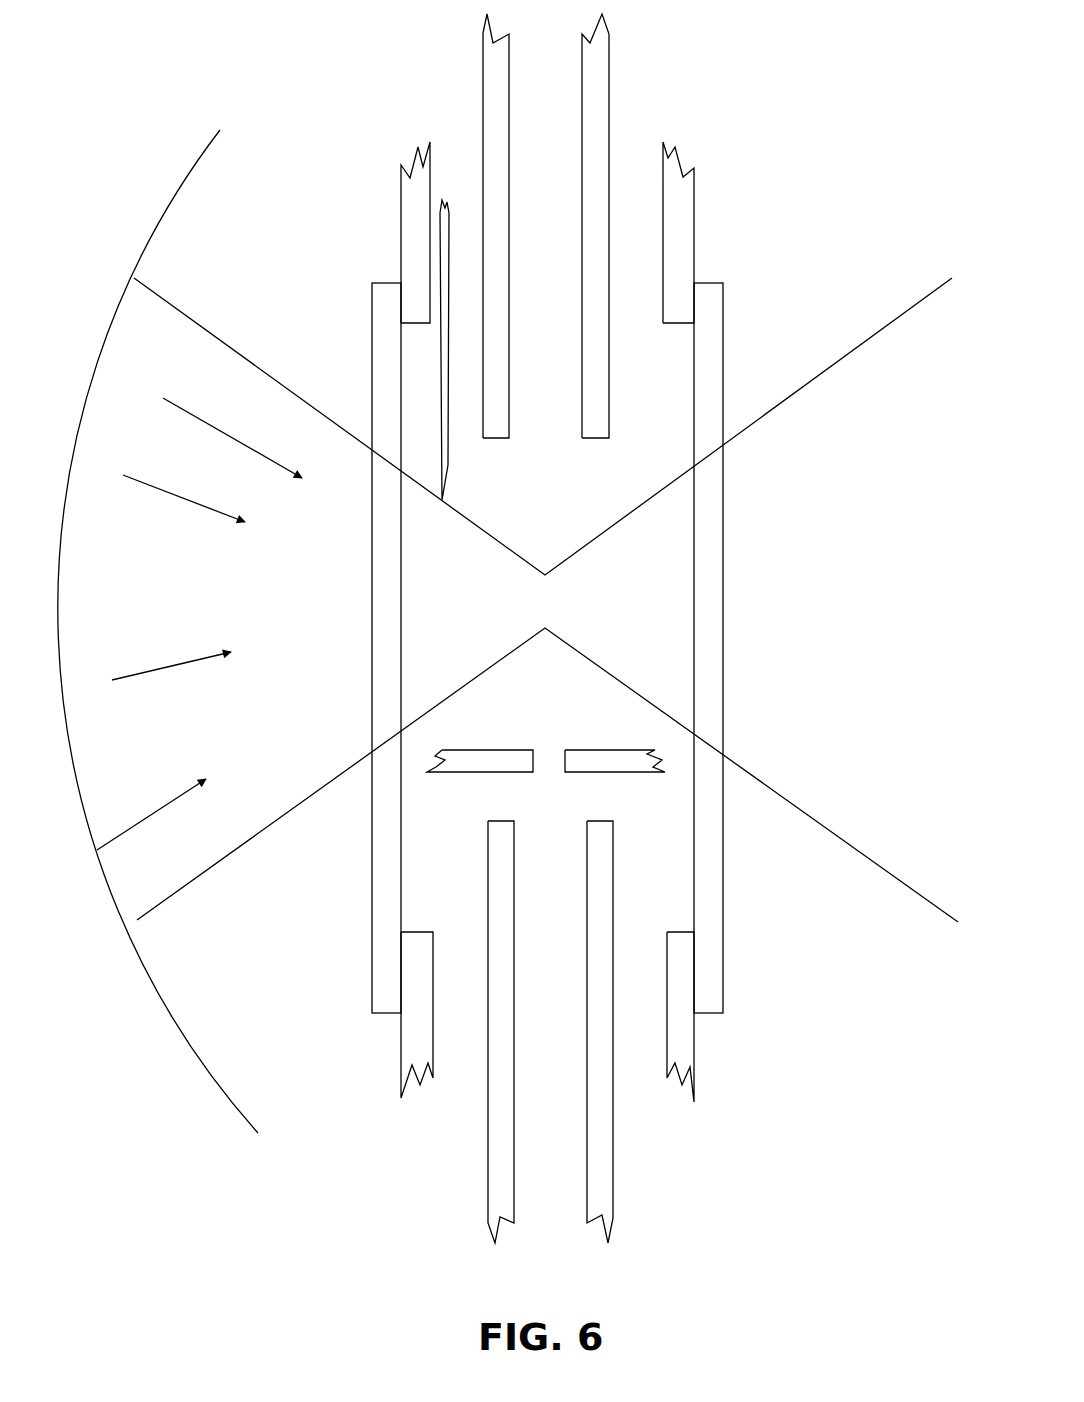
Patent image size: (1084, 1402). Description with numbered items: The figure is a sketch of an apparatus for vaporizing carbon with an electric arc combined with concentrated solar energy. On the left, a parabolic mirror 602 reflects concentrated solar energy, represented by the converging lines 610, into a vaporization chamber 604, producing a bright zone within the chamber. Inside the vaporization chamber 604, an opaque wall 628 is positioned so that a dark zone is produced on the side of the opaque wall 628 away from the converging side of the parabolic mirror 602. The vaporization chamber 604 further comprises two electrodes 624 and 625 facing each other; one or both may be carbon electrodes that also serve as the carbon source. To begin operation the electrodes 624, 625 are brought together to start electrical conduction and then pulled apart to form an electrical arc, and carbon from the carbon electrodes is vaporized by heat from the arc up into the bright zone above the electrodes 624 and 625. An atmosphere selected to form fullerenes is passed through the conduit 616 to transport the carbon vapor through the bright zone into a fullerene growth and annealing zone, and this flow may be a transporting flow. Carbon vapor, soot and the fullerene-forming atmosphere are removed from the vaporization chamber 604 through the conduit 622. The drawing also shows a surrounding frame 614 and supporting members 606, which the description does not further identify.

The parabolic mirror 602 is at (157, 227).
The vaporization chamber 604 is at (762, 375).
The support rods 606 is at (694, 217).
The lines representing concentrated solar energy 610 is at (165, 663).
The housing frame 614 is at (373, 378).
The conduit 616 is at (612, 1170).
The conduit 622 is at (607, 80).
The electrode 624 is at (495, 772).
The electrode 625 is at (595, 772).
The opaque wall 628 is at (447, 464).